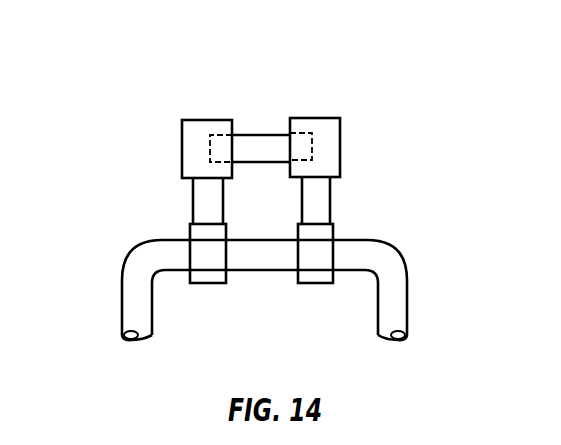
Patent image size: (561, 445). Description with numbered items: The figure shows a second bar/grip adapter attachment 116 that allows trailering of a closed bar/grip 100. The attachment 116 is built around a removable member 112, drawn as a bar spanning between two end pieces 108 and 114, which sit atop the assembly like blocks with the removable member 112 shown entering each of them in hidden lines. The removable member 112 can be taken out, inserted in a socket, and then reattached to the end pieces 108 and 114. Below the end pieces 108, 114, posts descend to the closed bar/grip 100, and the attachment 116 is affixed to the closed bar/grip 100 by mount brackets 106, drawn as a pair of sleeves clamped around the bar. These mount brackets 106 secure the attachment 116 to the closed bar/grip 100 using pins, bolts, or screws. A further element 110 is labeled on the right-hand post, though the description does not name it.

The closed bar/grip 100 is at (127, 307).
The mount brackets 106 is at (318, 284).
The end piece 108 is at (341, 138).
The right post 110 is at (331, 203).
The removable member 112 is at (248, 134).
The end piece 114 is at (181, 140).
The second attachment 116 is at (193, 203).